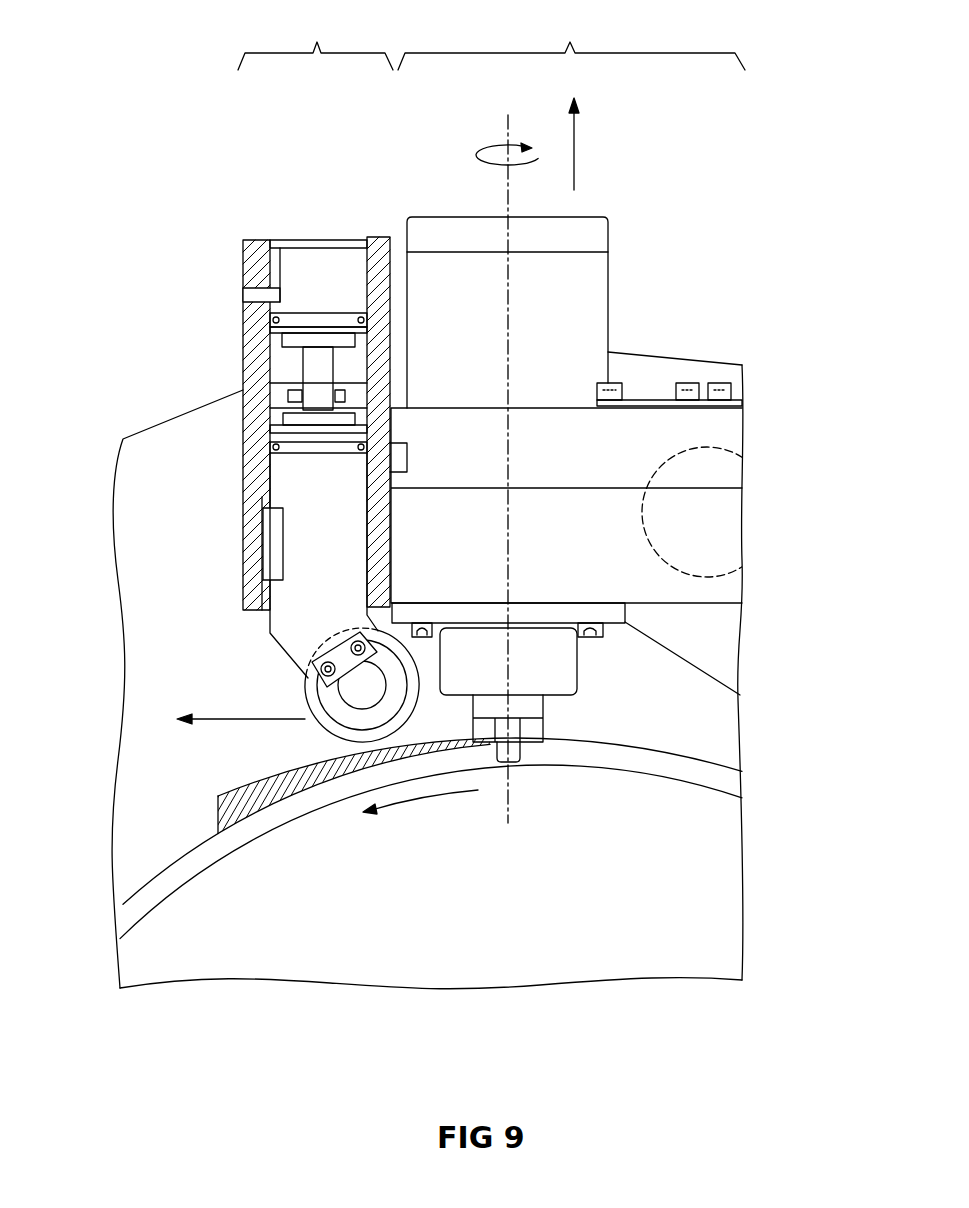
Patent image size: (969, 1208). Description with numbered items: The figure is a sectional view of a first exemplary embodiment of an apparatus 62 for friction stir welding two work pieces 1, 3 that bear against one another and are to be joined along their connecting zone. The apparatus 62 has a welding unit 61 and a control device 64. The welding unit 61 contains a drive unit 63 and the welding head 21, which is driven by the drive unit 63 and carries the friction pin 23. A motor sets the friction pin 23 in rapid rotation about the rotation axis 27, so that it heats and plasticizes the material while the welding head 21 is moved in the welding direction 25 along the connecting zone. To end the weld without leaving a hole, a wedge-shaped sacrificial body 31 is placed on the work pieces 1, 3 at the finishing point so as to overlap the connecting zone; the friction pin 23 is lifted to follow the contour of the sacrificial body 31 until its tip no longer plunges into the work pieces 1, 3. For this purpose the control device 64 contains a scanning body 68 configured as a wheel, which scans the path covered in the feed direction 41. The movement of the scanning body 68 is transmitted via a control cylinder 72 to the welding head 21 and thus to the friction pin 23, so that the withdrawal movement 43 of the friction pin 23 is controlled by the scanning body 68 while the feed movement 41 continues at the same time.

The work piece 1 is at (165, 884).
The work piece 3 is at (165, 884).
The welding head 21 is at (613, 628).
The friction pin 23 is at (522, 752).
The welding direction 25 is at (416, 798).
The rotation axis 27 is at (508, 336).
The sacrificial body 31 is at (275, 792).
The feed movement 41 is at (225, 722).
The withdrawal movement 43 is at (577, 148).
The welding unit 61 is at (586, 32).
The apparatus 62 is at (815, 408).
The drive unit 63 is at (592, 461).
The control device 64 is at (330, 32).
The scanning body 68 is at (337, 726).
The control cylinder 72 is at (305, 624).